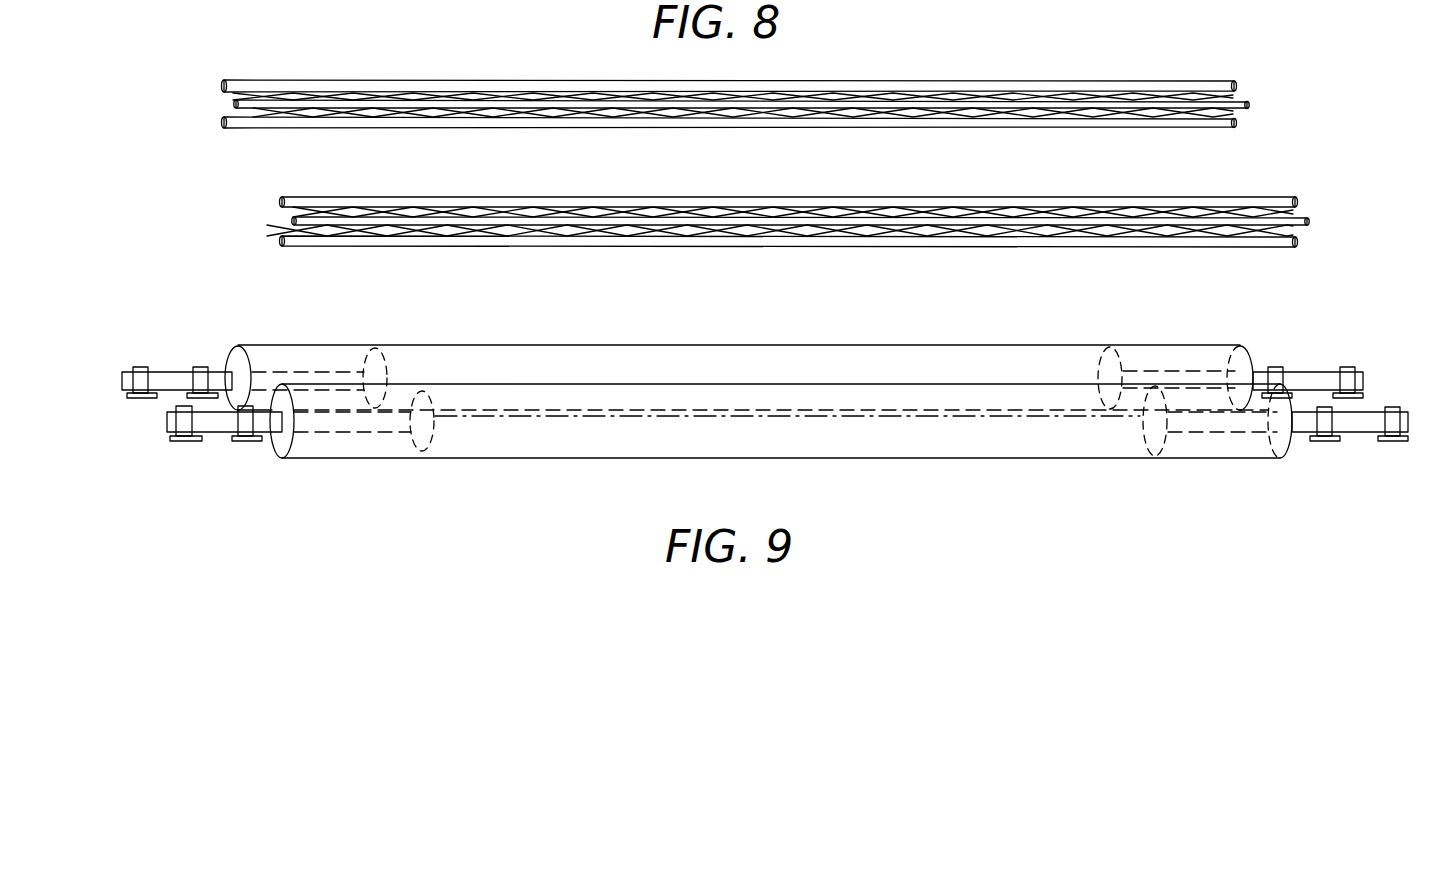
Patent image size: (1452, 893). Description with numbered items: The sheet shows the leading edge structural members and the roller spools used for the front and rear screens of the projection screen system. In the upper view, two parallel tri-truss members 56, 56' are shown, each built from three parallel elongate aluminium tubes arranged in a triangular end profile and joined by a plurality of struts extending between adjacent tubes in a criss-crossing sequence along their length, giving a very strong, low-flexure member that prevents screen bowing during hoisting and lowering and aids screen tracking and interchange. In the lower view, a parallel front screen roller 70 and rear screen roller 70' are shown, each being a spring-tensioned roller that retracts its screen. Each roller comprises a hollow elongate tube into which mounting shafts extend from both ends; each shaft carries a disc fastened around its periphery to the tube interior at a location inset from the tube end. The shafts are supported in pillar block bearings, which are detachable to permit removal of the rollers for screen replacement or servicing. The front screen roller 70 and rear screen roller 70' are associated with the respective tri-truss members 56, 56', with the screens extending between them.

In FIG. 8, the tri-truss member 56 is at (800, 195).
In FIG. 8, the tri-truss member 56' is at (736, 86).
In FIG. 9, the front screen roller 70 is at (809, 459).
In FIG. 9, the rear screen roller 70' is at (759, 371).